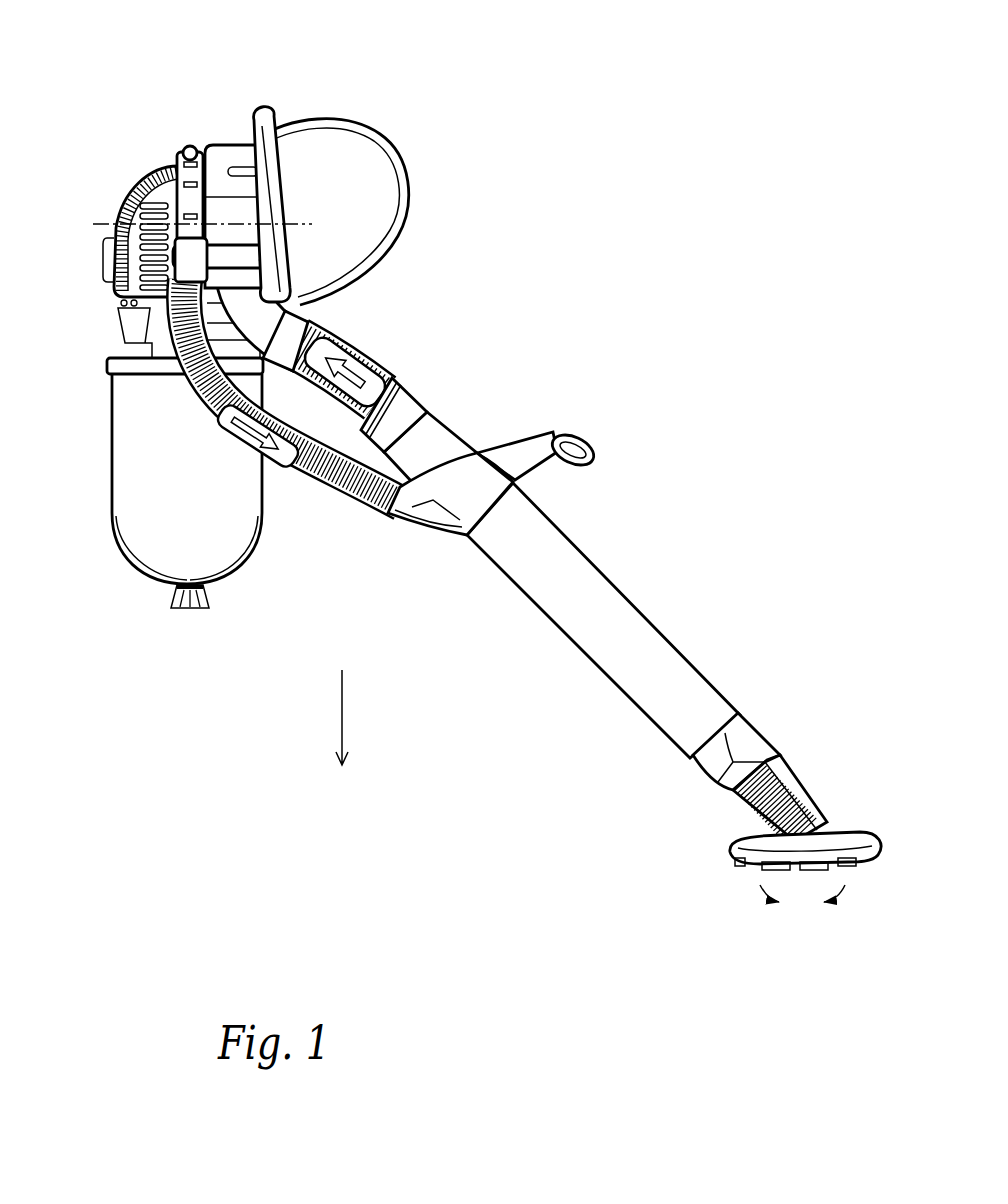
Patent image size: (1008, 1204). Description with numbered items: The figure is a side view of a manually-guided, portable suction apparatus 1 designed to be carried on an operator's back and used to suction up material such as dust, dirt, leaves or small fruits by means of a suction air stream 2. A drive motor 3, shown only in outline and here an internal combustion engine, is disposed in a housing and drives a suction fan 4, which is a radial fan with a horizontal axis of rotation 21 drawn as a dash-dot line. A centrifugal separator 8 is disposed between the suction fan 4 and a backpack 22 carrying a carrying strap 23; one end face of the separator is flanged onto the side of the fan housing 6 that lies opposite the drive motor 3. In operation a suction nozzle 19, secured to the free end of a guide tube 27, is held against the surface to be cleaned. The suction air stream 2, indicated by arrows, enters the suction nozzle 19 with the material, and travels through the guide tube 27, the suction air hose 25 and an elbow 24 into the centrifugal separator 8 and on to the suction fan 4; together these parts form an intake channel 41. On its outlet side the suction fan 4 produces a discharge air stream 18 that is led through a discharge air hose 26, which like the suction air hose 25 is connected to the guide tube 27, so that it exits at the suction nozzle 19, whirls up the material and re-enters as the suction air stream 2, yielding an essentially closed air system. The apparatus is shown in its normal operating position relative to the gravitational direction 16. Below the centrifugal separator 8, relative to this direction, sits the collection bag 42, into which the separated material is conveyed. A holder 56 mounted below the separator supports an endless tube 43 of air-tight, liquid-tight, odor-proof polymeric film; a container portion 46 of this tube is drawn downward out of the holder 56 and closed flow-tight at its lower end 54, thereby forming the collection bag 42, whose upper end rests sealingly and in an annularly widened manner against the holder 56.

The suction apparatus 1 is at (503, 318).
The suction air stream 2 is at (357, 370).
The drive motor 3 is at (119, 200).
The suction fan 4 is at (172, 144).
The fan housing 6 is at (190, 146).
The centrifugal separator 8 is at (222, 156).
The gravitational direction 16 is at (344, 720).
The discharge air stream 18 is at (267, 465).
The suction nozzle 19 is at (820, 848).
The axis of rotation 21 is at (280, 222).
The backpack 22 is at (272, 152).
The carrying strap 23 is at (391, 144).
The elbow 24 is at (250, 312).
The suction air hose 25 is at (397, 378).
The discharge air hose 26 is at (324, 476).
The guide tube 27 is at (612, 613).
The intake channel 41 is at (243, 208).
The collection bag 42 is at (200, 500).
The endless tube 43 is at (254, 556).
The container portion 46 is at (152, 546).
The lower end 54 is at (160, 590).
The holder 56 is at (116, 369).